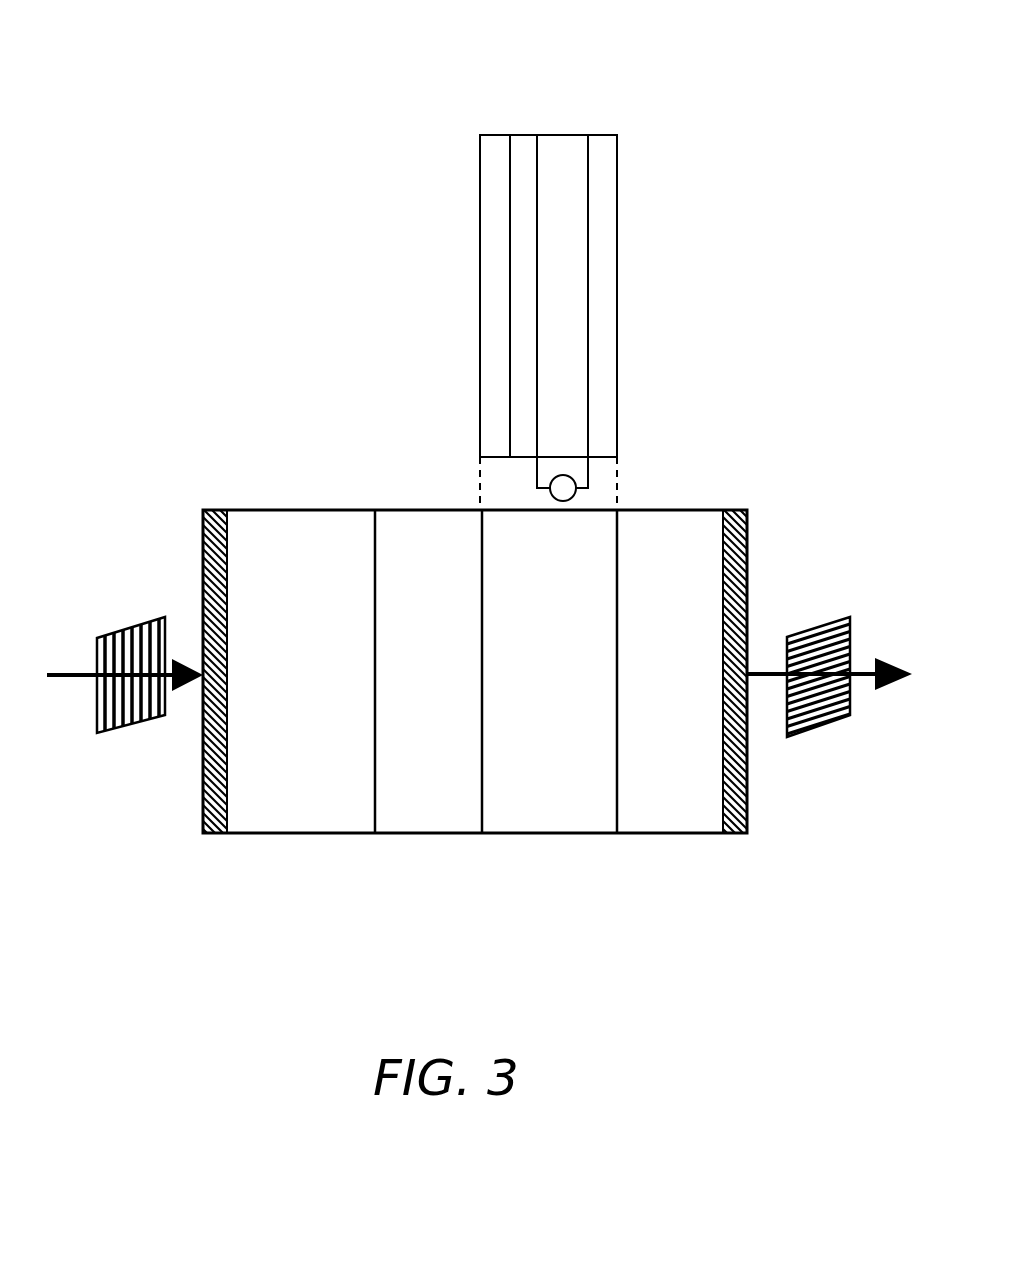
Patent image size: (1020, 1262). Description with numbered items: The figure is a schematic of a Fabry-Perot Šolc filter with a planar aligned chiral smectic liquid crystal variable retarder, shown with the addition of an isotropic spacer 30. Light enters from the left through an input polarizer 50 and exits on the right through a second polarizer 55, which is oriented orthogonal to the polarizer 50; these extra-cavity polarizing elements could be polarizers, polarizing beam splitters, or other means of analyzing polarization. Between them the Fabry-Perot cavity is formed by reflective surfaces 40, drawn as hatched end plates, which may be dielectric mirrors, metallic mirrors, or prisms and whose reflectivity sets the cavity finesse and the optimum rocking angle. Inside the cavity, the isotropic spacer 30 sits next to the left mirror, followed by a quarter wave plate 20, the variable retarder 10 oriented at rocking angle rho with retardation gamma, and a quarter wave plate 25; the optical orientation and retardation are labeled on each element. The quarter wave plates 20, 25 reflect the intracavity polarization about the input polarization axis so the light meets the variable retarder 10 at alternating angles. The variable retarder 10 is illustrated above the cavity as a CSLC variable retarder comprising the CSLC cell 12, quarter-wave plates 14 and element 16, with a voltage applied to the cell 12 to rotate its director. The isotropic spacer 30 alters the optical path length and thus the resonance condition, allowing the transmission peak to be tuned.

The variable retarder 10 is at (575, 833).
The CSLC cell 12 is at (575, 135).
The quarter-wave plate 14 is at (602, 135).
The CSLC variable retarder element 16 is at (497, 135).
The quarter wave plate 20 is at (447, 833).
The quarter wave plate 25 is at (683, 833).
The isotropic spacer 30 is at (347, 833).
The reflective surfaces 40 is at (738, 833).
The polarizer 50 is at (135, 625).
The polarizer 55 is at (808, 628).